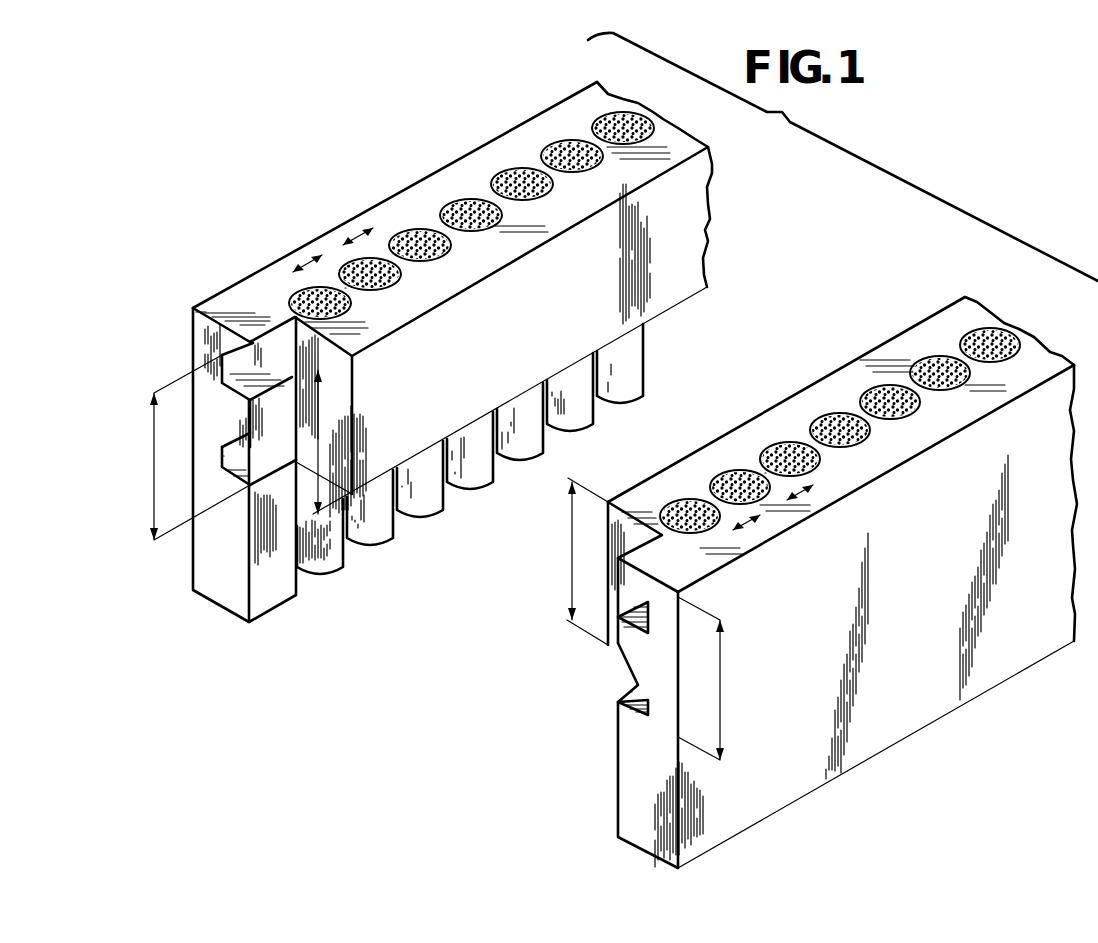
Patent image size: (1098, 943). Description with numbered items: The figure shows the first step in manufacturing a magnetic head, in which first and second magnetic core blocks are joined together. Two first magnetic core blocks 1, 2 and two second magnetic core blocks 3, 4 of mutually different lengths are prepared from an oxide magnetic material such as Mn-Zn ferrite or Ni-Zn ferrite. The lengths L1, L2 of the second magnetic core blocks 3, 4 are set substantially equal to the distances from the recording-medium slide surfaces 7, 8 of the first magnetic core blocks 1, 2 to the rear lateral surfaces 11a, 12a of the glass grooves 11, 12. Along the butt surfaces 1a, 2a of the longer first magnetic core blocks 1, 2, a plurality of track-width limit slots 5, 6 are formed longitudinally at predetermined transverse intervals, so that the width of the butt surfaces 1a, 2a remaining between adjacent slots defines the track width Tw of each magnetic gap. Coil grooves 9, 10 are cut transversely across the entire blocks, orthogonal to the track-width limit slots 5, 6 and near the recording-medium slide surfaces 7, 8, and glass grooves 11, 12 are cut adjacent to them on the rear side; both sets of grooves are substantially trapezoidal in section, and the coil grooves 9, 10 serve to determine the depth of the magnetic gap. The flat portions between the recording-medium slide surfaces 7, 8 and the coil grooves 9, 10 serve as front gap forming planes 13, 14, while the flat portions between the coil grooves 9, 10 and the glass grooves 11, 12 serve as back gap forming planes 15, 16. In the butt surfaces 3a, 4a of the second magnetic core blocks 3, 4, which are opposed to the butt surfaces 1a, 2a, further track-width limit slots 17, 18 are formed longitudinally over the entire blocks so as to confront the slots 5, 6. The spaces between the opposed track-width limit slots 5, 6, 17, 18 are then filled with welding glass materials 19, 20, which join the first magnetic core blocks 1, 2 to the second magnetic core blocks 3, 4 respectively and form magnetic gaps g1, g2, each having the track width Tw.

The first magnetic core block 1 is at (200, 563).
The butt surface 1a is at (268, 572).
The first magnetic core block 2 is at (628, 730).
The butt surface 2a is at (618, 773).
The second magnetic core block 3 is at (333, 387).
The butt surface 3a is at (290, 412).
The second magnetic core block 4 is at (618, 537).
The butt surface 4a is at (662, 537).
The track-width limit slot 5 is at (516, 172).
The track-width limit slot 6 is at (948, 390).
The recording-medium slide surface 7 is at (232, 295).
The recording-medium slide surface 8 is at (688, 572).
The coil groove 9 is at (218, 312).
The coil groove 10 is at (635, 632).
The glass groove 11 is at (222, 460).
The rear lateral surface 11a is at (225, 473).
The glass groove 12 is at (638, 715).
The rear lateral surface 12a is at (630, 692).
The front gap forming plane 13 is at (272, 318).
The front gap forming plane 14 is at (618, 560).
The back gap forming plane 15 is at (250, 420).
The back gap forming plane 16 is at (612, 645).
The track-width limit slot 17 is at (655, 125).
The track-width limit slot 18 is at (928, 358).
The welding glass material 19 is at (610, 124).
The welding glass material 20 is at (800, 448).
The magnetic gap g1 is at (350, 282).
The magnetic gap g2 is at (762, 472).
The track width Tw is at (556, 380).
The length of second magnetic core block L1 is at (306, 442).
The length of second magnetic core block L2 is at (573, 561).